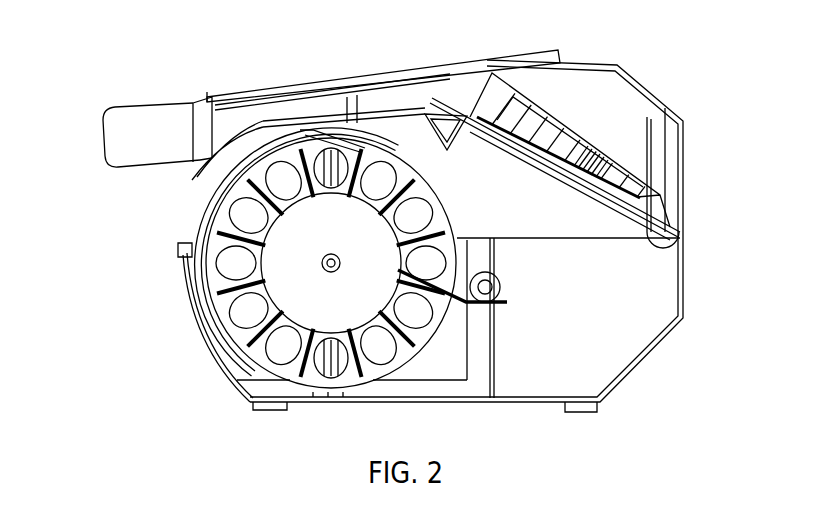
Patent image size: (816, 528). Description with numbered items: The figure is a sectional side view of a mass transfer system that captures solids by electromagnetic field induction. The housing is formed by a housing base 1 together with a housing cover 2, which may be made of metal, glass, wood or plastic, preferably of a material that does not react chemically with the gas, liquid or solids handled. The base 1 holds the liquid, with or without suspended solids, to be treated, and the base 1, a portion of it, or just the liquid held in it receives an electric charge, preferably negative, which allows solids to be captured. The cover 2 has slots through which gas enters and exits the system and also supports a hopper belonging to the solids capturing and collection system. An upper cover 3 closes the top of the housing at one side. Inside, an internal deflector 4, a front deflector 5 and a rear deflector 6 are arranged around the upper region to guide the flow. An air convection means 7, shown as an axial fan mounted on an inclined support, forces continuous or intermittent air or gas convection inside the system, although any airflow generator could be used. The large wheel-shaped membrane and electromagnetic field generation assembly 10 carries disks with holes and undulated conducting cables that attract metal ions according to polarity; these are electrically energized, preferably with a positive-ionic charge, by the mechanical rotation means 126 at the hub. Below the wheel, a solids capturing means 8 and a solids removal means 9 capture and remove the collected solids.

The housing base 1 is at (602, 371).
The housing cover 2 is at (689, 128).
The upper cover 3 is at (128, 130).
The internal deflector 4 is at (407, 105).
The front deflector 5 is at (428, 114).
The rear deflector 6 is at (317, 132).
The air convection means 7 is at (580, 138).
The solids capturing means 8 is at (400, 272).
The solids removal means 9 is at (502, 286).
The membrane and electromagnetic field generation assembly 10 is at (220, 223).
The mechanical rotation means 126 is at (320, 267).